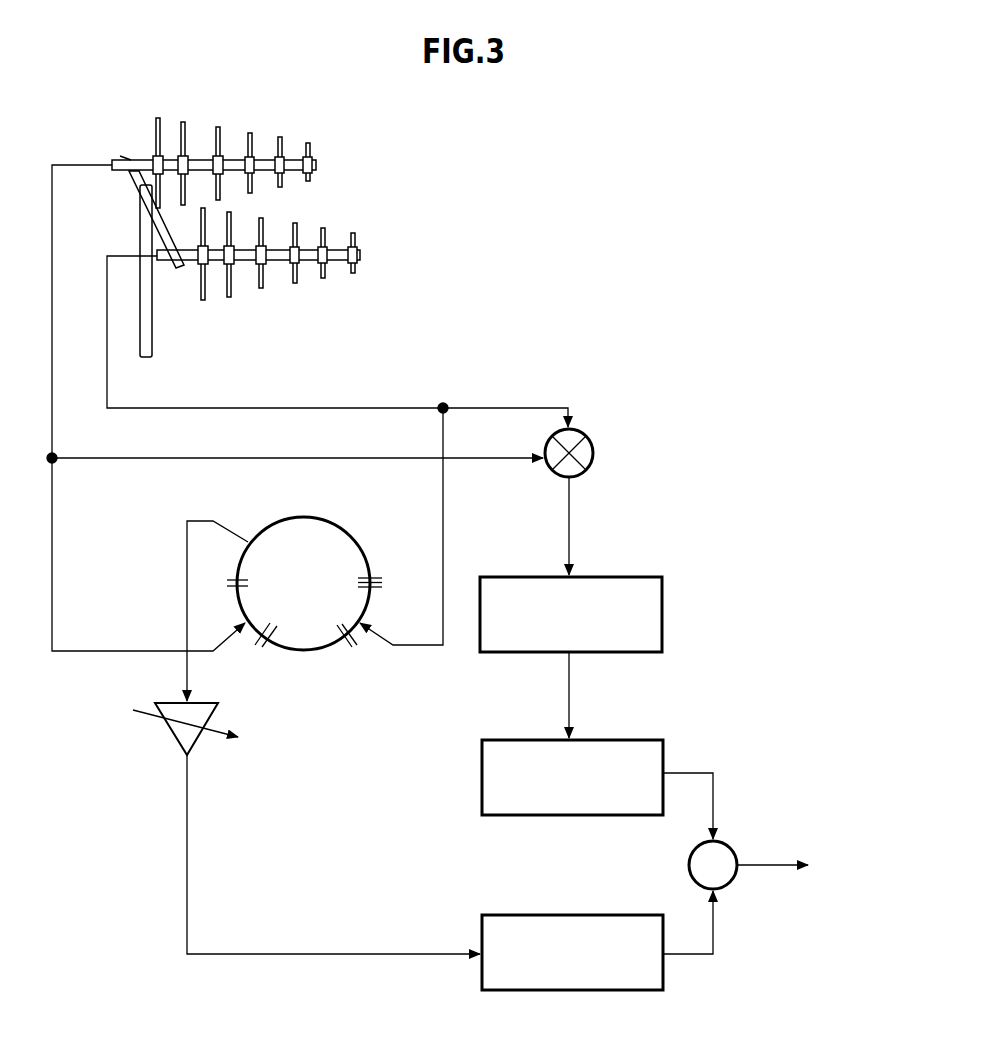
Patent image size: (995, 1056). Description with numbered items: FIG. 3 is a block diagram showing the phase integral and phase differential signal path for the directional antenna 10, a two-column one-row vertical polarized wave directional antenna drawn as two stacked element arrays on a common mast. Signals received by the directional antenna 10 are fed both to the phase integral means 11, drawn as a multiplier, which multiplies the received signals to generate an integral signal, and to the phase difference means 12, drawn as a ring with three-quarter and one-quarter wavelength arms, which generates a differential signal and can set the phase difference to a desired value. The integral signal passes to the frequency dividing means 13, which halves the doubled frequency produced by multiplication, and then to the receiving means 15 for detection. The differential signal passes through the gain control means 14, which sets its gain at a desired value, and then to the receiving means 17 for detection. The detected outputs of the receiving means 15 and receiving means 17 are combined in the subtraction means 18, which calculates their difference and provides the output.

The directional antenna 10 is at (147, 361).
The phase integral means 11 is at (585, 427).
The phase difference means 12 is at (285, 650).
The frequency dividing means 13 is at (598, 652).
The gain control means 14 is at (197, 745).
The receiving means 15 is at (607, 815).
The receiving means 17 is at (607, 990).
The subtraction means 18 is at (727, 890).